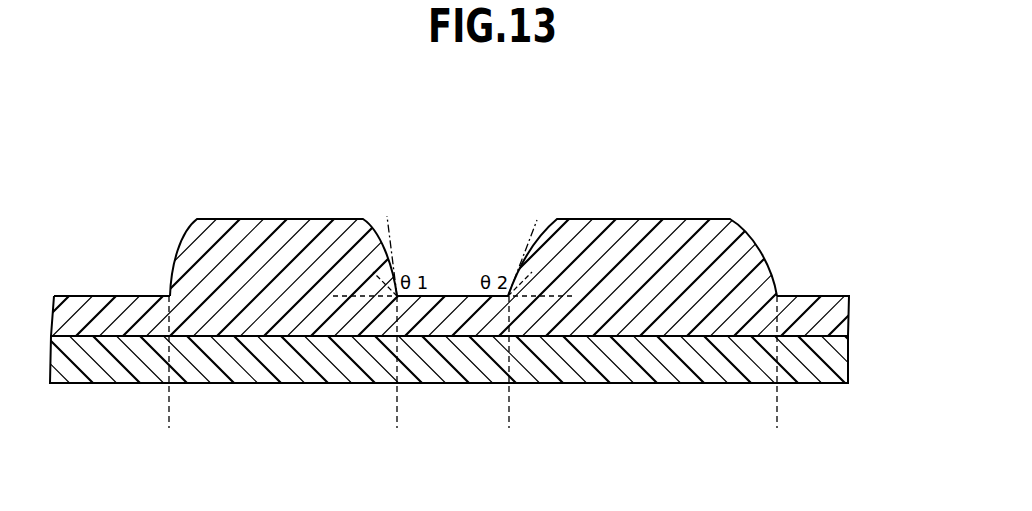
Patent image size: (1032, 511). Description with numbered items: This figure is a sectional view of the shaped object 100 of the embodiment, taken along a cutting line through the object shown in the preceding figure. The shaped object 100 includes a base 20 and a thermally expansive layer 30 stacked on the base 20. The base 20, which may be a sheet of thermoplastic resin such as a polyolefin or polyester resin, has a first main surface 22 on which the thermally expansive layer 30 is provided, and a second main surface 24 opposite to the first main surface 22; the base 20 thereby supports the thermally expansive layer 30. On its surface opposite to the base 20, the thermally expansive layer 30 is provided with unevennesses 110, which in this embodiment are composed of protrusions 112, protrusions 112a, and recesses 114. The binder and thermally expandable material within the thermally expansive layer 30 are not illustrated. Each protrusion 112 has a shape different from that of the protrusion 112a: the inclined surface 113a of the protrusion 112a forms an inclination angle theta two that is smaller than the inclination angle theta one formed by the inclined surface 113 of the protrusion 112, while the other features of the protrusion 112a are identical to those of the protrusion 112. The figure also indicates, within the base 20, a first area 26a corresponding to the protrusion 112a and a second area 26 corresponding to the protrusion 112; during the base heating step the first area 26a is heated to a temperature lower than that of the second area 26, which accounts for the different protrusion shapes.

The shaped object 100 is at (745, 137).
The base 20 is at (849, 362).
The first main surface 22 is at (92, 342).
The second main surface 24 is at (95, 384).
The thermally expansive layer 30 is at (849, 312).
The unevennesses 110 is at (605, 147).
The protrusion 112 is at (360, 218).
The protrusion 112a is at (573, 218).
The inclined surface 113 is at (172, 265).
The inclined surface 113a is at (532, 245).
The recess 114 is at (457, 295).
The second area 26 is at (387, 429).
The first area 26a is at (509, 424).